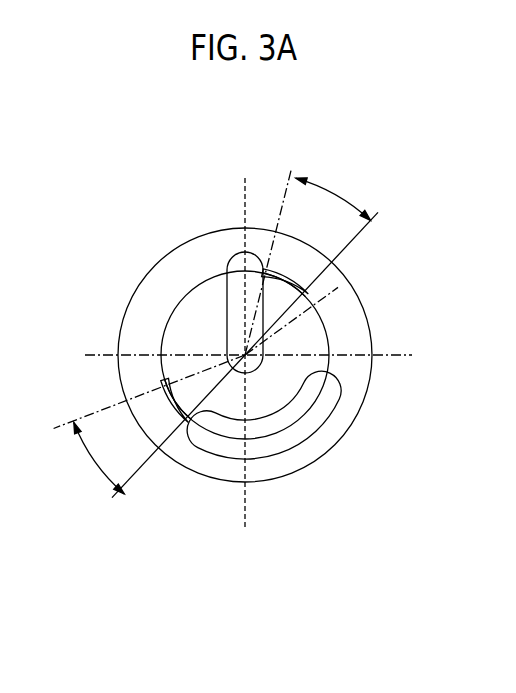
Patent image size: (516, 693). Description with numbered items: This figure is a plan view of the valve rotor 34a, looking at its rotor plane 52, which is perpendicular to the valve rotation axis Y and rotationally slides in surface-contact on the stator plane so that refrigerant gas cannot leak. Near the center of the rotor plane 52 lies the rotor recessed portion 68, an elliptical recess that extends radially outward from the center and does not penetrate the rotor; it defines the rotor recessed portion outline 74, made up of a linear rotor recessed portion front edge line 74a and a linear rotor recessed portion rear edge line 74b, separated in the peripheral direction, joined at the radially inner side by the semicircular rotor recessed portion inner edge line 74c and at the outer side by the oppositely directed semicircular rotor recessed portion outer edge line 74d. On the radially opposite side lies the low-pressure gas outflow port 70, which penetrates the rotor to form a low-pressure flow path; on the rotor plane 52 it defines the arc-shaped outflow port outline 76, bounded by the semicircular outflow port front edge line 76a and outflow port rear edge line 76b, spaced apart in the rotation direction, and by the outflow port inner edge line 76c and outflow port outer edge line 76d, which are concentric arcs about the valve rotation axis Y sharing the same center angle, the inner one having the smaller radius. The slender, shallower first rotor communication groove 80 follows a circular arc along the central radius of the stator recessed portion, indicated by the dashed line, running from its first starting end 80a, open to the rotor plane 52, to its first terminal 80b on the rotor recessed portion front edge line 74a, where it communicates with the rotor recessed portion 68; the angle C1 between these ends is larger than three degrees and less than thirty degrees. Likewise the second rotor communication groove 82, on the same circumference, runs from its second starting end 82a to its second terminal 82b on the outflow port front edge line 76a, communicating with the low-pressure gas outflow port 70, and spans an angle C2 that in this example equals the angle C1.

The valve rotor 34a is at (271, 402).
The rotor plane 52 is at (271, 334).
The rotor recessed portion 68 is at (197, 240).
The low-pressure gas outflow port 70 is at (293, 414).
The rotor recessed portion outline 74 is at (178, 345).
The rotor recessed portion front edge line 74a is at (316, 303).
The rotor recessed portion rear edge line 74b is at (178, 345).
The rotor recessed portion inner edge line 74c is at (238, 345).
The rotor recessed portion outer edge line 74d is at (237, 264).
The outflow port outline 76 is at (275, 461).
The outflow port front edge line 76a is at (275, 454).
The outflow port rear edge line 76b is at (304, 452).
The outflow port inner edge line 76c is at (290, 452).
The outflow port outer edge line 76d is at (316, 428).
The first rotor communication groove 80 is at (329, 220).
The first starting end 80a is at (329, 220).
The first terminal 80b is at (263, 266).
The second rotor communication groove 82 is at (126, 465).
The second starting end 82a is at (130, 465).
The second terminal 82b is at (199, 432).
The valve rotation axis Y is at (378, 358).
The angle C1 is at (337, 196).
The angle C2 is at (95, 461).